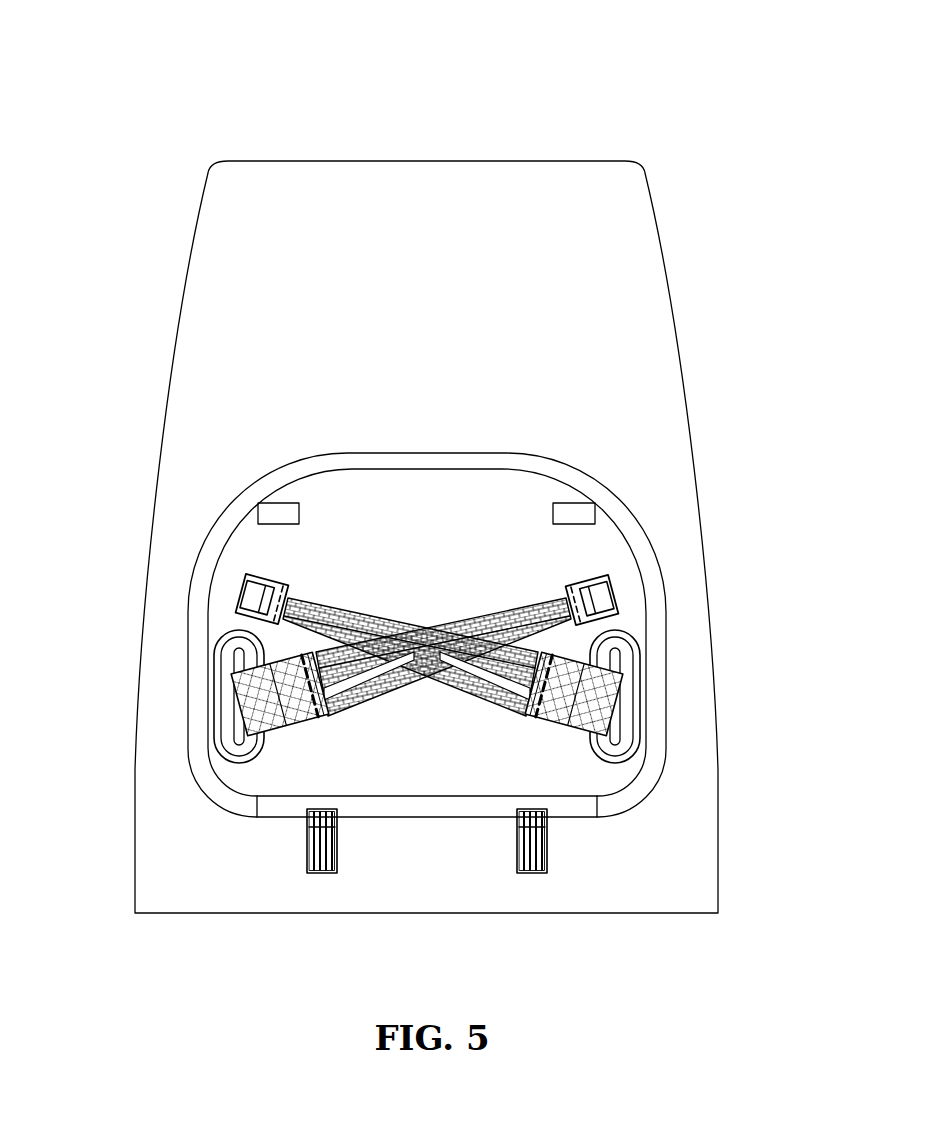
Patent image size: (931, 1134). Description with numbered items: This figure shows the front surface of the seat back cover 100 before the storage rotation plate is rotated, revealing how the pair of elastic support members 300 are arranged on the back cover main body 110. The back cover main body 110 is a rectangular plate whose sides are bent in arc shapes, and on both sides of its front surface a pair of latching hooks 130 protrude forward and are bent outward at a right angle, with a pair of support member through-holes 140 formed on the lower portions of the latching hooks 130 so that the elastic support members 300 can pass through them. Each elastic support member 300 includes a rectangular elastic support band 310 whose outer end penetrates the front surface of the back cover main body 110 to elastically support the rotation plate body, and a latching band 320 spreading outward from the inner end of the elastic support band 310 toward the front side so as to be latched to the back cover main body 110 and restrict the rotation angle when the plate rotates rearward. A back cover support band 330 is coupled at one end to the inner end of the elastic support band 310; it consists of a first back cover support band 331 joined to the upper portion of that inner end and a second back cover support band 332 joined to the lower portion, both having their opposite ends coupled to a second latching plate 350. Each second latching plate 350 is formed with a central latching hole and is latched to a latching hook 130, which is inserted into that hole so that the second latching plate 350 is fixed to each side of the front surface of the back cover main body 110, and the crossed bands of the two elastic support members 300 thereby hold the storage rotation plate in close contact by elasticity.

The seat back cover 100 is at (411, 136).
The back cover main body 110 is at (645, 288).
The latching hook 130 is at (600, 596).
The support member through-hole 140 is at (617, 653).
The elastic support member 300 is at (385, 712).
The elastic support band 310 is at (605, 703).
The latching band 320 is at (557, 720).
The back cover support band 330 is at (324, 814).
The first back cover support band 331 is at (340, 650).
The second back cover support band 332 is at (348, 702).
The second latching plate 350 is at (601, 594).